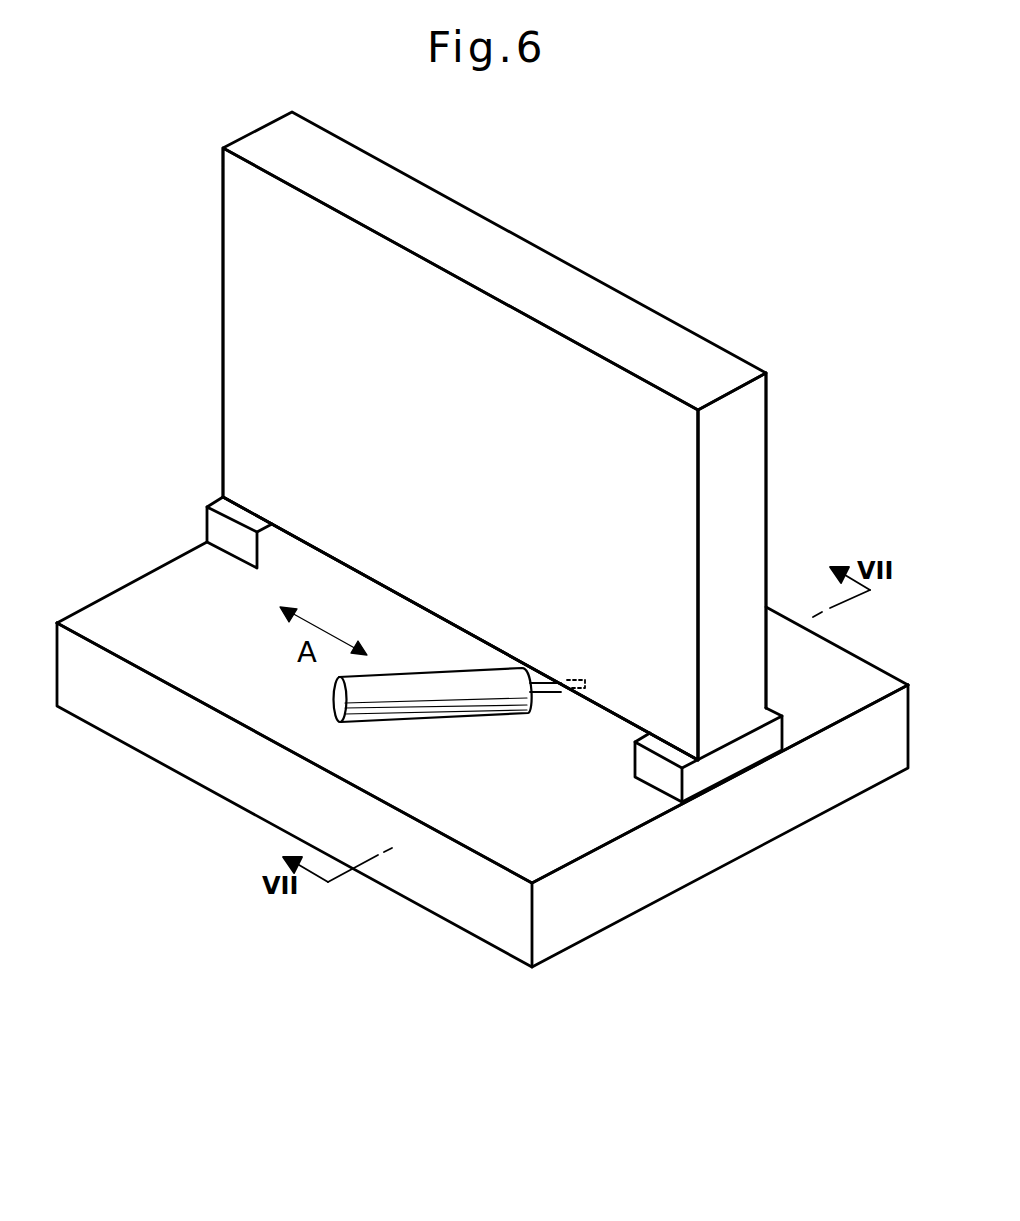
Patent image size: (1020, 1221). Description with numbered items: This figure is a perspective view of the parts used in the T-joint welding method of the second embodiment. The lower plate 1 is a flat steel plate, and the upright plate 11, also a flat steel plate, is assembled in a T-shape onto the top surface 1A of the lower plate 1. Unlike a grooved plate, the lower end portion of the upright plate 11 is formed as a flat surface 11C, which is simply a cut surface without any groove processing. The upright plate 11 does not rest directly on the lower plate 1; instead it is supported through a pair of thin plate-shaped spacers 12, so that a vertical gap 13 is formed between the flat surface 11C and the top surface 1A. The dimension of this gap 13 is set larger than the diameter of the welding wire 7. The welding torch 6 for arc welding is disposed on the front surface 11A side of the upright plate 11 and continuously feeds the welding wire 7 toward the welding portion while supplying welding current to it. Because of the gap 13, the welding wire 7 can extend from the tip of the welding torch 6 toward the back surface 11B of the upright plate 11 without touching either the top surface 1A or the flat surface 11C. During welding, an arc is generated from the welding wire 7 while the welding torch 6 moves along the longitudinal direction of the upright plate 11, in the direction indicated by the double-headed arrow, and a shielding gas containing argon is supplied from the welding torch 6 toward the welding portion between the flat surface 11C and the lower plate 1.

The lower plate 1 is at (698, 857).
The top surface 1A is at (197, 662).
The welding torch 6 is at (357, 691).
The welding wire 7 is at (547, 690).
The upright plate 11 is at (517, 248).
The front surface 11A is at (292, 310).
The back surface 11B is at (767, 507).
The flat surface 11C is at (322, 552).
The spacers 12 is at (215, 530).
The gap 13 is at (607, 727).